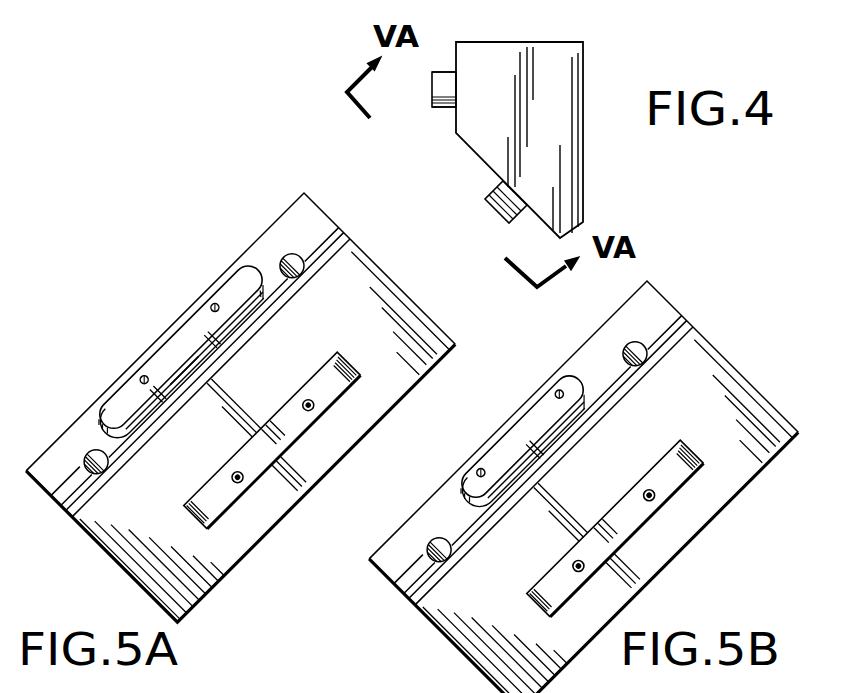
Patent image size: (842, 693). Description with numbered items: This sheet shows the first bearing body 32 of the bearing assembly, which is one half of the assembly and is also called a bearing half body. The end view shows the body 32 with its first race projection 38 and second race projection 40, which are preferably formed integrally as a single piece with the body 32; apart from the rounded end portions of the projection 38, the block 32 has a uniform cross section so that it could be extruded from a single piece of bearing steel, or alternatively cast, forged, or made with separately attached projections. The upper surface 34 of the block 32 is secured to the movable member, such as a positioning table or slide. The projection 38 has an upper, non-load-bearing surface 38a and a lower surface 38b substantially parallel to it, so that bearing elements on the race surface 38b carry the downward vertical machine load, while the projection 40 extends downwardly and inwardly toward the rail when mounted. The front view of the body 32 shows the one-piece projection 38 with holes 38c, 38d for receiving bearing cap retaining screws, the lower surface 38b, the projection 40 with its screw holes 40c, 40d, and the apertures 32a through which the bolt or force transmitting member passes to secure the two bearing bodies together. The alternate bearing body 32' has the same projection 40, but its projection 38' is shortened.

In FIG. 4, the first bearing body 32 is at (550, 140).
In FIG. 5A, the first bearing body 32 is at (240, 407).
In FIG. 5B, the bearing body 32' is at (588, 487).
In FIG. 5A, the apertures 32a is at (285, 256).
In FIG. 4, the upper surface 34 is at (512, 42).
In FIG. 4, the first race projection 38 is at (471, 89).
In FIG. 5A, the first race projection 38 is at (182, 333).
In FIG. 5B, the projection 38' is at (525, 422).
In FIG. 4, the upper surface 38a is at (438, 72).
In FIG. 4, the lower surface 38b is at (437, 107).
In FIG. 5A, the lower surface 38b is at (181, 366).
In FIG. 5A, the hole 38c is at (140, 380).
In FIG. 5A, the hole 38d is at (211, 305).
In FIG. 4, the second race projection 40 is at (503, 193).
In FIG. 5A, the second race projection 40 is at (317, 370).
In FIG. 5B, the second race projection 40 is at (658, 462).
In FIG. 5A, the screw hole 40c is at (243, 482).
In FIG. 5A, the screw hole 40d is at (313, 410).